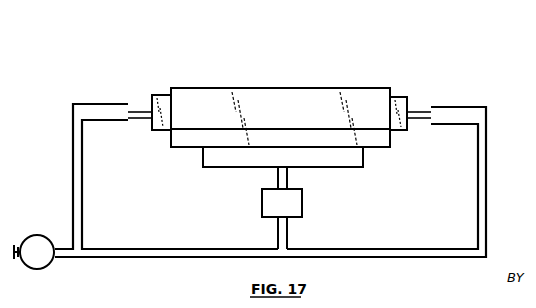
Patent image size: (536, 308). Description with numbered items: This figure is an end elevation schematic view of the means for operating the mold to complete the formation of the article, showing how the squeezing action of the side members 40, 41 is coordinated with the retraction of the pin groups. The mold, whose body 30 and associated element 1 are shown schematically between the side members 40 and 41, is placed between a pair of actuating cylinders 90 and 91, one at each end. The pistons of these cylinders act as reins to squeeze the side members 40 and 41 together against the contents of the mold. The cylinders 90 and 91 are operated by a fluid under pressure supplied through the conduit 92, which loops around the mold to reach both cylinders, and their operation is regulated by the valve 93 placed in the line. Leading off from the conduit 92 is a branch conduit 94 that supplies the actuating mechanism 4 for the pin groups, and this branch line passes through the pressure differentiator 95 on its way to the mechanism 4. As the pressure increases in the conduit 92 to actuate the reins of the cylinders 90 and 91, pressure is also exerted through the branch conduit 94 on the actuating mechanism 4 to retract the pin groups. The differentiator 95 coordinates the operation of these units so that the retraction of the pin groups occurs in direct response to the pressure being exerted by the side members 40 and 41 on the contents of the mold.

The piezoelectric element 1 is at (372, 148).
The actuating mechanism 4 is at (202, 158).
The cylindrical body 30 is at (294, 88).
The side member 40 is at (160, 95).
The side member 41 is at (400, 97).
The actuating cylinder 90 is at (97, 104).
The actuating cylinder 91 is at (448, 107).
The conduit 92 is at (487, 180).
The valve 93 is at (44, 268).
The branch conduit 94 is at (288, 178).
The pressure differentiator 95 is at (303, 202).